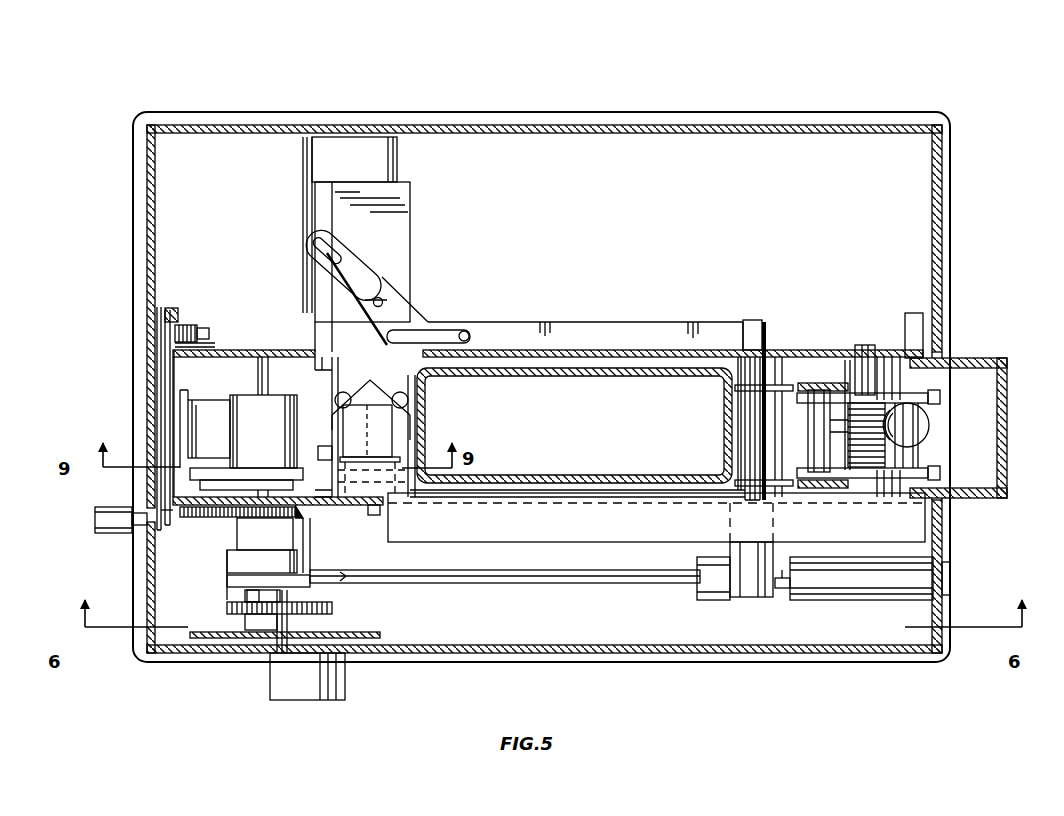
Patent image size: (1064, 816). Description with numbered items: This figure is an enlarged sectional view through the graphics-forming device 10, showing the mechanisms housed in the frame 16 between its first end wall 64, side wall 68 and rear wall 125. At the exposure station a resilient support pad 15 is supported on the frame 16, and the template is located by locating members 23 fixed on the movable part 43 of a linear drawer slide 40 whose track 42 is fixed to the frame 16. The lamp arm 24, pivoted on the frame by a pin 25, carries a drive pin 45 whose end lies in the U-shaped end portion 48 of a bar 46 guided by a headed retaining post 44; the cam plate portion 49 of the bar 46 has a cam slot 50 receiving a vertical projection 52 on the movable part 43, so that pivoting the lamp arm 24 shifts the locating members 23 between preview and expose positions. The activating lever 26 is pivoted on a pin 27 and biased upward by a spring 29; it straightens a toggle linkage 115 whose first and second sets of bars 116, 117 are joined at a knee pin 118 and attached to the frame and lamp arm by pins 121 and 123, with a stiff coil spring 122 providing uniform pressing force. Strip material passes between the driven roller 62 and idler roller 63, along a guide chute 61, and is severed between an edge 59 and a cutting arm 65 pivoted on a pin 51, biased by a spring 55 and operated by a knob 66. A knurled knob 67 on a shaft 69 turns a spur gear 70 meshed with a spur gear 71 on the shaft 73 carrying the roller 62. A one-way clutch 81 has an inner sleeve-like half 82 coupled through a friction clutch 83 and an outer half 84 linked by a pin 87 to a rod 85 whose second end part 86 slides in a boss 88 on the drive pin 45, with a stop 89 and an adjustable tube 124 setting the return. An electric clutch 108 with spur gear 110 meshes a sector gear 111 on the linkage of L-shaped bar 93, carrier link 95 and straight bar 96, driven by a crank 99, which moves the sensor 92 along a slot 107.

The device 10 is at (185, 108).
The frame 16 is at (582, 112).
The first end wall 64 is at (147, 272).
The side wall 68 is at (390, 655).
The rear wall 125 is at (948, 535).
The activating lever 26 is at (1000, 356).
The bar 46 is at (592, 332).
The linear drawer slide 40 is at (302, 153).
The track 42 is at (365, 167).
The movable part 43 is at (408, 192).
The cam slot 50 is at (352, 260).
The cam plate portion 49 is at (376, 277).
The vertical projection 52 is at (400, 282).
The headed retaining post 44 is at (465, 320).
The cutting arm 65 is at (160, 366).
The guide chute 61 is at (178, 398).
The edge 59 is at (167, 418).
The spring 55 is at (176, 310).
The pin 51 is at (212, 330).
The idler roller 63 is at (204, 398).
The carrier link 95 is at (210, 462).
The driven roller 62 is at (283, 400).
The inverted L-shaped bar 93 is at (268, 470).
The shaft 73 is at (260, 376).
The sensor 92 is at (325, 452).
The locating members 23 is at (390, 398).
The resilient support pad 15 is at (392, 430).
The slot 107 is at (410, 455).
The straight bar 96 is at (330, 495).
The drive pin 45 is at (750, 320).
The U-shaped end portion 48 is at (768, 330).
The lamp arm 24 is at (780, 391).
The pin 25 is at (740, 420).
The crank 99 is at (666, 497).
The pin 123 is at (816, 400).
The second set of bars 117 is at (847, 375).
The pin 27 is at (862, 345).
The pin 121 is at (890, 375).
The toggle linkage 115 is at (936, 394).
The first set of bars 116 is at (936, 468).
The spring 29 is at (862, 460).
The stiff coil spring 122 is at (928, 420).
The pin 118 is at (920, 442).
The electric clutch 108 is at (282, 546).
The spur gear 110 is at (296, 512).
The outer half 84 is at (240, 552).
The one-way clutch 81 is at (226, 565).
The pin 87 is at (246, 563).
The inner sleeve-like half 82 is at (228, 586).
The rod 85 is at (477, 580).
The spur gear 71 is at (228, 608).
The spur gear 70 is at (314, 608).
The shaft 69 is at (316, 626).
The friction clutch 83 is at (250, 602).
The knurled knob 67 is at (312, 700).
The stop 89 is at (712, 600).
The boss 88 is at (753, 597).
The second end part 86 is at (780, 588).
The tube 124 is at (836, 588).
The knob 66 is at (95, 522).
The sector gear 111 is at (178, 512).